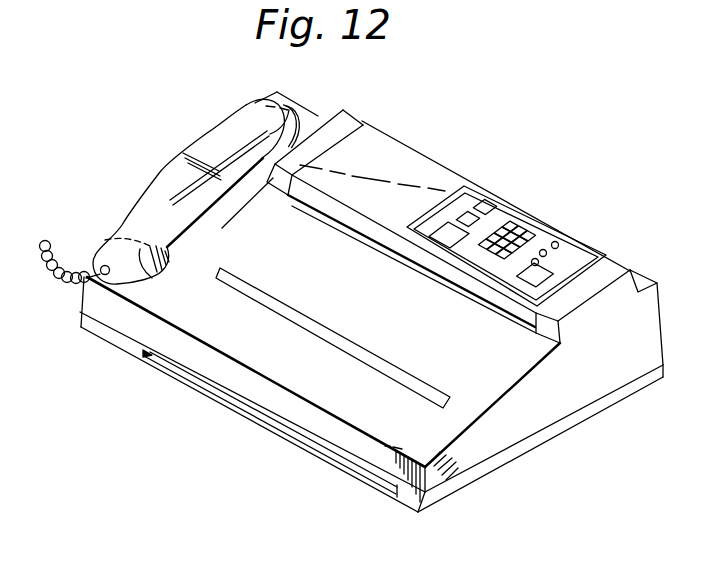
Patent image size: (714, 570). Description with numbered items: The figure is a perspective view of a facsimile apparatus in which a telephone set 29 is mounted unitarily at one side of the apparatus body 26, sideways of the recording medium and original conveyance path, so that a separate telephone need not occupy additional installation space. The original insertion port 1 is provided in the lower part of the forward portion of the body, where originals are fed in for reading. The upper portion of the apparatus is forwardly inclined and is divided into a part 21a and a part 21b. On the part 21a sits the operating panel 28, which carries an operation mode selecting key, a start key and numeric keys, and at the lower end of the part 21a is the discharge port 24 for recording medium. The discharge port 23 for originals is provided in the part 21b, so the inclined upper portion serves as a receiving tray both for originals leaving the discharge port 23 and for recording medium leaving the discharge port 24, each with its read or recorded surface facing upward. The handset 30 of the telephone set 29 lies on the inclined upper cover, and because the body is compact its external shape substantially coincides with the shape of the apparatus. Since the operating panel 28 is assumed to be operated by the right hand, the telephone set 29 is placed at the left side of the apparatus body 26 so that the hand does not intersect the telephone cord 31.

The original insertion port 1 is at (371, 412).
The part of the upper portion 21a is at (418, 164).
The part of the upper portion 21b is at (488, 384).
The discharge port for originals 23 is at (355, 350).
The discharge port for recording medium 24 is at (413, 226).
The apparatus body 26 is at (599, 380).
The operating panel 28 is at (525, 230).
The telephone set 29 is at (118, 428).
The handset 30 is at (196, 191).
The telephone cord 31 is at (57, 257).